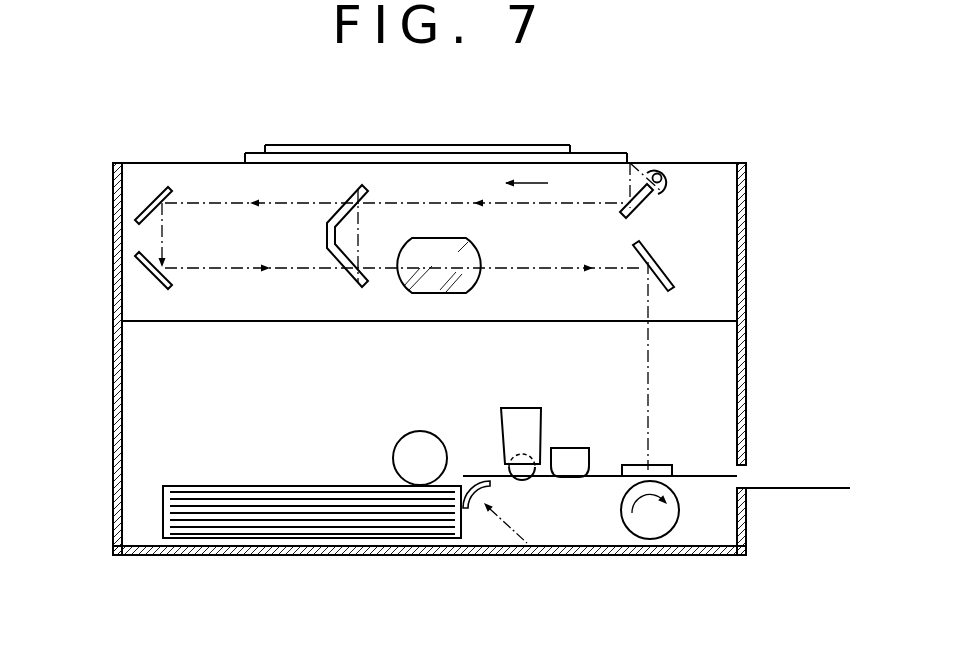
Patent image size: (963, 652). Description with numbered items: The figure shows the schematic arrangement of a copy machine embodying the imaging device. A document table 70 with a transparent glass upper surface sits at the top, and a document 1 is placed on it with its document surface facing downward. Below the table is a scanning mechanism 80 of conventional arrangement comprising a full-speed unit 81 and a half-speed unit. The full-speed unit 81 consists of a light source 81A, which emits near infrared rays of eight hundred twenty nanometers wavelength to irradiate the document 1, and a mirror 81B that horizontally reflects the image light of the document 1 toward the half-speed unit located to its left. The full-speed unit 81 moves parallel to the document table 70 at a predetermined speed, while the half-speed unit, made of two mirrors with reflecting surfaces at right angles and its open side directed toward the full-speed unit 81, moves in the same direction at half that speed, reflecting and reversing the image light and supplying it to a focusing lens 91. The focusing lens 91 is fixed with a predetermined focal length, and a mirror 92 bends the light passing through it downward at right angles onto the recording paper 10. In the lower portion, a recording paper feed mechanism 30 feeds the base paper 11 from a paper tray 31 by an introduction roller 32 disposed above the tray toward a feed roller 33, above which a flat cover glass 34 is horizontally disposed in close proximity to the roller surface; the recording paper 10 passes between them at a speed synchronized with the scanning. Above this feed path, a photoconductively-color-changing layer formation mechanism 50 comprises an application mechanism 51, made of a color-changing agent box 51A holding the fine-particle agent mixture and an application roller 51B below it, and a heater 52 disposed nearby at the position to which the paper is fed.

The document 1 is at (481, 147).
The recording paper 10 is at (715, 473).
The paper 11 is at (262, 510).
The recording paper feed mechanism 30 is at (597, 516).
The paper tray 31 is at (420, 540).
The introduction roller 32 is at (406, 432).
The feed roller 33 is at (663, 527).
The cover glass 34 is at (670, 466).
The photoconductively-color-changing layer formation mechanism 50 is at (607, 363).
The photoconductively-color-changing agent application mechanism 51 is at (489, 413).
The color-changing agent box 51A is at (530, 408).
The application roller 51B is at (507, 478).
The heater 52 is at (575, 448).
The document table 70 is at (575, 150).
The scanning mechanism 80 is at (55, 178).
The full-speed unit 81 is at (680, 174).
The light source 81A is at (657, 172).
The mirror 81B is at (650, 204).
The focusing lens 91 is at (480, 283).
The mirror 92 is at (672, 274).